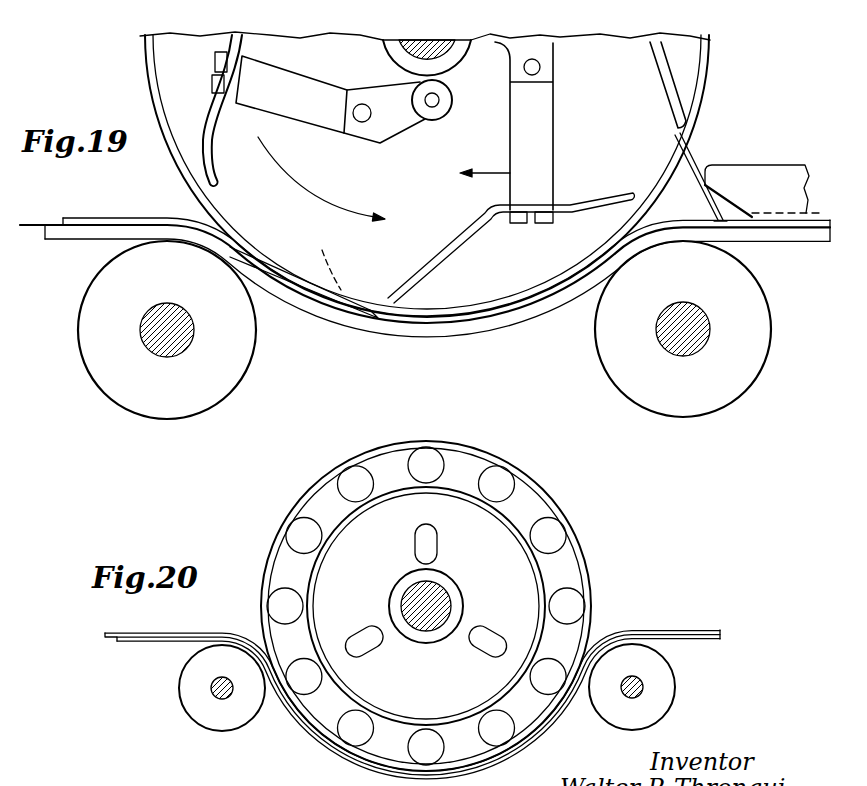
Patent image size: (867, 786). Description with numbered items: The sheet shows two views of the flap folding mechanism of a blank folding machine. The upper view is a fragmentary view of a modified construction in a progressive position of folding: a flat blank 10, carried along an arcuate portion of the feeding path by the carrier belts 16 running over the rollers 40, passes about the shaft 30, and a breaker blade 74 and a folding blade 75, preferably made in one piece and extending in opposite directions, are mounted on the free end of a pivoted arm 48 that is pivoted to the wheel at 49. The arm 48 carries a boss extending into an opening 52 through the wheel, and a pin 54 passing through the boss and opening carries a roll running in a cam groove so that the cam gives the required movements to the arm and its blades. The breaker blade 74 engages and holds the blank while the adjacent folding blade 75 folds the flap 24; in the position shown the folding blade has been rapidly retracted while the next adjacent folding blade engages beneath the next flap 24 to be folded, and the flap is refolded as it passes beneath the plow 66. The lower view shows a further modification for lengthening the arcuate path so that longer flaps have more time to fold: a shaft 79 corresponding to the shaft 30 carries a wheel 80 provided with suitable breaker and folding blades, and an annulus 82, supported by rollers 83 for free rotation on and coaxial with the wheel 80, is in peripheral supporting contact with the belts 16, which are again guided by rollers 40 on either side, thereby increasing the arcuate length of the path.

In FIG. 19, the flat blank 10 is at (32, 228).
In FIG. 19, the carrier belts 16 is at (104, 218).
In FIG. 20, the carrier belts 16 is at (160, 624).
In FIG. 19, the forwardly extending flap 24 is at (688, 157).
In FIG. 19, the shaft 30 is at (432, 40).
In FIG. 19, the roller 40 is at (240, 362).
In FIG. 20, the roller 40 is at (178, 683).
In FIG. 19, the arm 48 is at (556, 152).
In FIG. 19, the pivot 49 is at (363, 104).
In FIG. 20, the opening 52 is at (432, 545).
In FIG. 19, the pin 54 is at (440, 98).
In FIG. 19, the plow 66 is at (750, 182).
In FIG. 19, the breaker blade 74 is at (214, 170).
In FIG. 19, the folding blade 75 is at (672, 106).
In FIG. 20, the shaft 79 is at (446, 590).
In FIG. 20, the wheel 80 is at (426, 606).
In FIG. 19, the annulus 82 is at (427, 176).
In FIG. 20, the annulus 82 is at (594, 582).
In FIG. 20, the rollers 83 is at (548, 522).